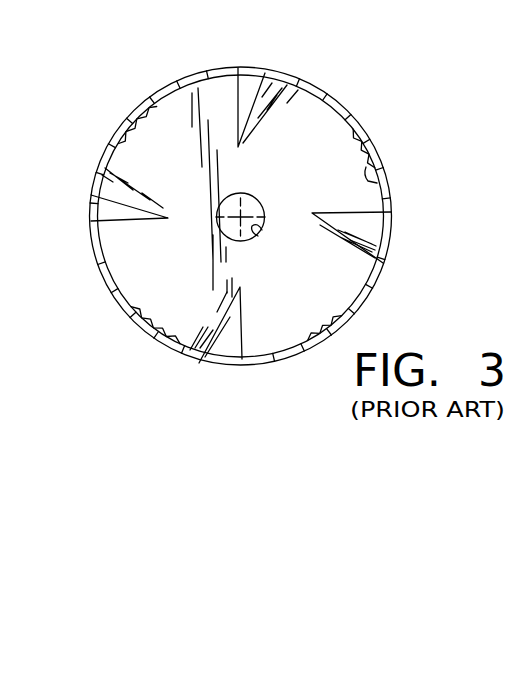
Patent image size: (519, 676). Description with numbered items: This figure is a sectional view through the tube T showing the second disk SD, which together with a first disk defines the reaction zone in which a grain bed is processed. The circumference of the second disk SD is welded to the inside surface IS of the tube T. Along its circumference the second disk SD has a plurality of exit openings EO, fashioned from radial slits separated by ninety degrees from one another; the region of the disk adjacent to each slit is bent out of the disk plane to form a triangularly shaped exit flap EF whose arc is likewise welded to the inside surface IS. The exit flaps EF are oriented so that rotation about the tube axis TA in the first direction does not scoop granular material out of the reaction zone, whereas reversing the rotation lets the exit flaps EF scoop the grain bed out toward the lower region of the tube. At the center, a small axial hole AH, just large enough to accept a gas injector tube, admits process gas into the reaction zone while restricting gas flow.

The tube T is at (358, 123).
The inside surface IS is at (377, 162).
The exit openings EO is at (248, 93).
The exit flaps EF is at (270, 85).
The axial hole AH is at (250, 238).
The tube axis TA is at (240, 217).
The second disk SD is at (315, 109).